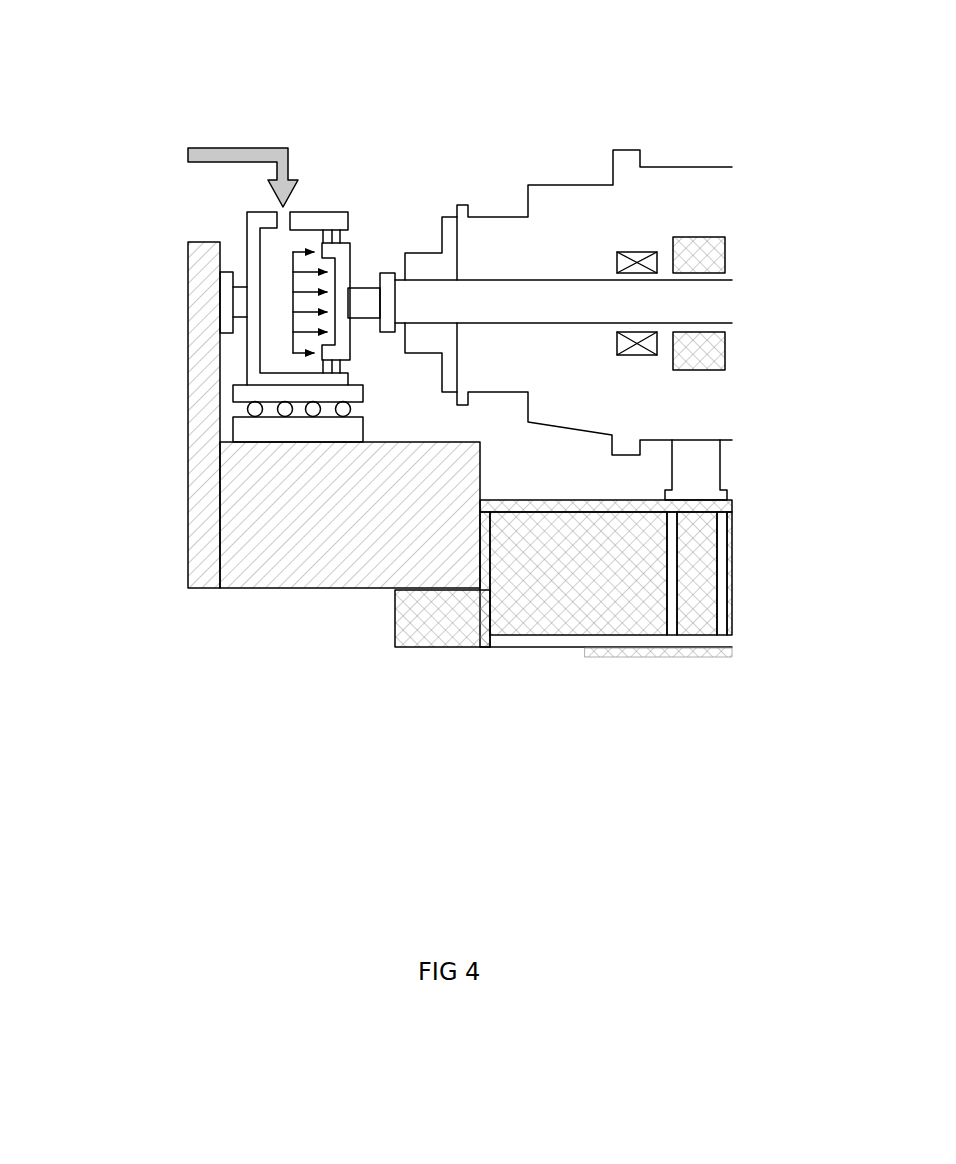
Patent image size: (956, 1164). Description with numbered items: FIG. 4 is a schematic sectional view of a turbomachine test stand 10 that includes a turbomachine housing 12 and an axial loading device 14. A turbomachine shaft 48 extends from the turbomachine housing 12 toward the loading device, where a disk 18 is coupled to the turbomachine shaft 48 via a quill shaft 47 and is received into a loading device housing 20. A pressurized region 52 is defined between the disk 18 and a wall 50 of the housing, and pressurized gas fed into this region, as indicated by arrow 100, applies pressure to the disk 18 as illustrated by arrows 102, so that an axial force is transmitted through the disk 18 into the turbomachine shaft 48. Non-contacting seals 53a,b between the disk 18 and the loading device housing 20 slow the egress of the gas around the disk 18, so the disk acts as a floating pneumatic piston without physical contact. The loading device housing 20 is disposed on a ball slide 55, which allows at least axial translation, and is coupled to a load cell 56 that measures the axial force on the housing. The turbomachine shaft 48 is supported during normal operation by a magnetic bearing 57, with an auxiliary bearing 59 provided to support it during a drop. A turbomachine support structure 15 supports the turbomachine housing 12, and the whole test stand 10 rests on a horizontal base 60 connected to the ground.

The turbomachine test stand 10 is at (652, 57).
The arrow 100 is at (202, 147).
The axial loading device 14 is at (352, 167).
The loading device housing 20 is at (305, 220).
The disk 18 is at (345, 266).
The turbomachine shaft 48 is at (407, 297).
The turbomachine housing 12 is at (707, 166).
The auxiliary bearing 59 is at (630, 257).
The magnetic bearing 57 is at (717, 258).
The quill shaft 47 is at (363, 312).
The turbomachine support structure 15 is at (700, 473).
The horizontal base 60 is at (700, 592).
The load cell 56 is at (225, 300).
The wall 50 is at (252, 243).
The arrows 102 is at (293, 300).
The pressurized region 52 is at (276, 346).
The non-contacting seals 53a,b is at (345, 365).
The ball slide 55 is at (248, 398).